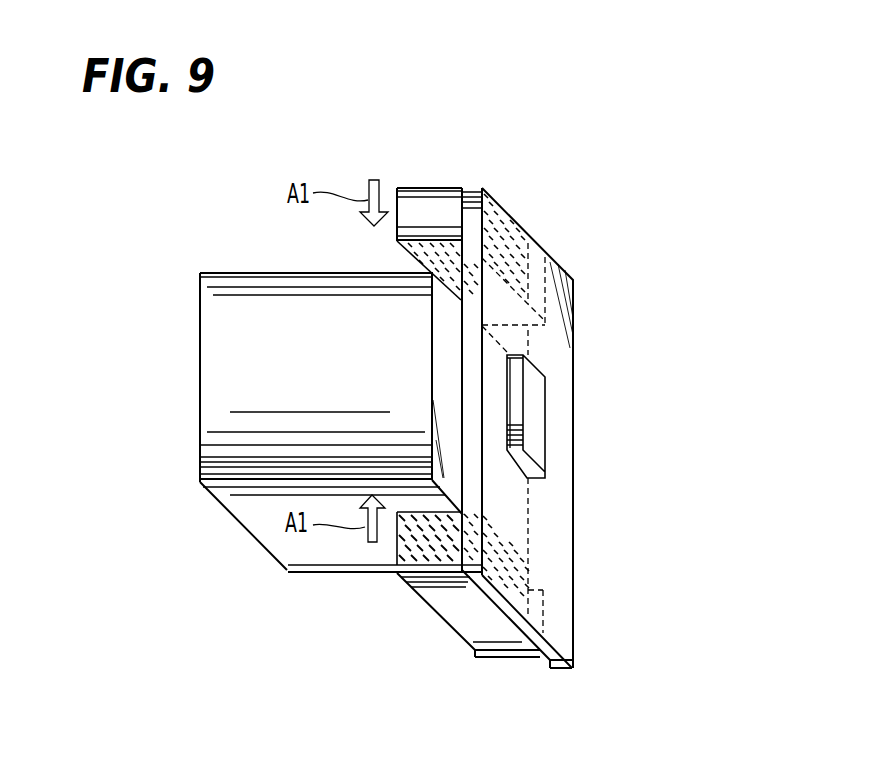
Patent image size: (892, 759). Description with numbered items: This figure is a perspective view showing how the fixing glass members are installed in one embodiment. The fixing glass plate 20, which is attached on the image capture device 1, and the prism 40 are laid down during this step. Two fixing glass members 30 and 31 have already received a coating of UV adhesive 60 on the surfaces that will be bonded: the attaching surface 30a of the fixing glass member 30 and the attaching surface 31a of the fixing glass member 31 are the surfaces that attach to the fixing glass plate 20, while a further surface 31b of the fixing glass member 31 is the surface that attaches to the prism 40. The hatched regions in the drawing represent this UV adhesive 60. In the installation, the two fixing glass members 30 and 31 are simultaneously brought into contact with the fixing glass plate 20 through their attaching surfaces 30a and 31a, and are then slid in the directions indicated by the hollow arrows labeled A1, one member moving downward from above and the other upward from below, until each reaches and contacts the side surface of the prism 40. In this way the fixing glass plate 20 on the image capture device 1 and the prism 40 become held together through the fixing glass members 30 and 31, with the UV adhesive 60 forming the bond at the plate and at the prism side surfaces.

The image capture device 1 is at (535, 410).
The fixing glass plate 20 is at (562, 465).
The fixing glass member 30 is at (445, 597).
The attaching surface 30a is at (527, 608).
The fixing glass member 31 is at (433, 200).
The attaching surface 31a is at (540, 267).
The attaching surface 31b is at (492, 312).
The prism 40 is at (233, 381).
The UV adhesive 60 is at (513, 195).